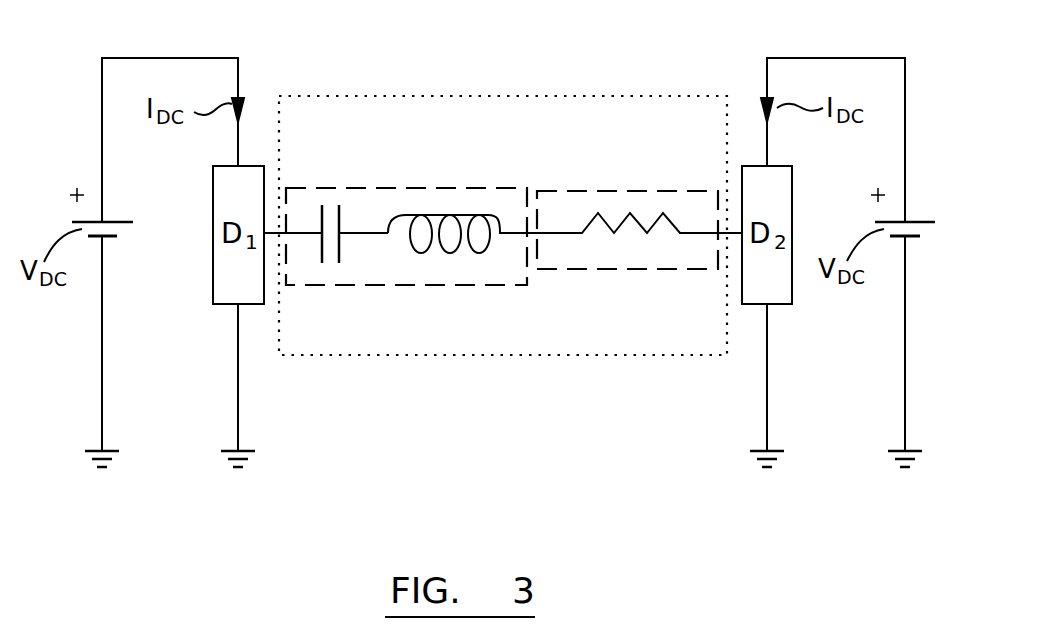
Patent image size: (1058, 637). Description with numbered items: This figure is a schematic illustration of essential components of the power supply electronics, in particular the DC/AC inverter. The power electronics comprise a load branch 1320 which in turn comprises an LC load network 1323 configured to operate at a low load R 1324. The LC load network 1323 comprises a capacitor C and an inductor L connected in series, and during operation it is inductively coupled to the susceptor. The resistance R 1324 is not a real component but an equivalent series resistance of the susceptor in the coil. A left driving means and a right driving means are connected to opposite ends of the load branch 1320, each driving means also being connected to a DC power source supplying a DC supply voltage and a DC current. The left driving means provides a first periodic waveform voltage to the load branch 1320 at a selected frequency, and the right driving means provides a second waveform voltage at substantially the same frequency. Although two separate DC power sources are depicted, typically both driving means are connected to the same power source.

The load branch 1320 is at (513, 96).
The LC load network 1323 is at (360, 188).
The low load R 1324 is at (610, 191).